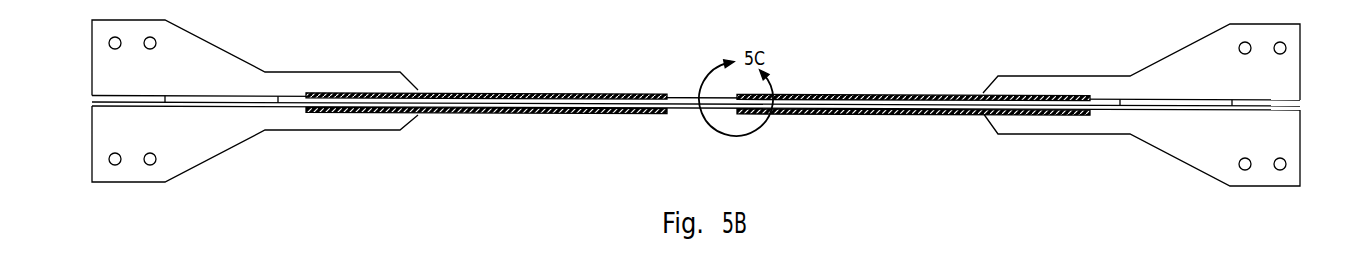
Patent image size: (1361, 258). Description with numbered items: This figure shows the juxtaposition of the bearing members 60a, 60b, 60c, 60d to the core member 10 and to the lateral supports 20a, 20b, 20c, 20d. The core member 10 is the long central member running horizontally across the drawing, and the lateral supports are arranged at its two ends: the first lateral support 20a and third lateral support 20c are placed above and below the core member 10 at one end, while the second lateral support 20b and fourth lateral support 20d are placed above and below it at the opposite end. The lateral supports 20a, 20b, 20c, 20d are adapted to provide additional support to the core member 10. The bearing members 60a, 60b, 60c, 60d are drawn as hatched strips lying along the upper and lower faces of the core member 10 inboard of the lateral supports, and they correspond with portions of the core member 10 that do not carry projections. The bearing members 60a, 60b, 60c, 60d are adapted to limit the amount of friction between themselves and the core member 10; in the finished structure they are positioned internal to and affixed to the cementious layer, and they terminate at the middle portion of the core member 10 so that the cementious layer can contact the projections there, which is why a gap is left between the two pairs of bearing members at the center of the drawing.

The core member 10 is at (1272, 100).
The first lateral support 20a is at (107, 60).
The second lateral support 20b is at (1293, 70).
The third lateral support 20c is at (122, 175).
The fourth lateral support 20d is at (1298, 147).
The bearing member 60a is at (1043, 94).
The bearing member 60b is at (1055, 115).
The bearing member 60c is at (380, 92).
The bearing member 60d is at (380, 113).